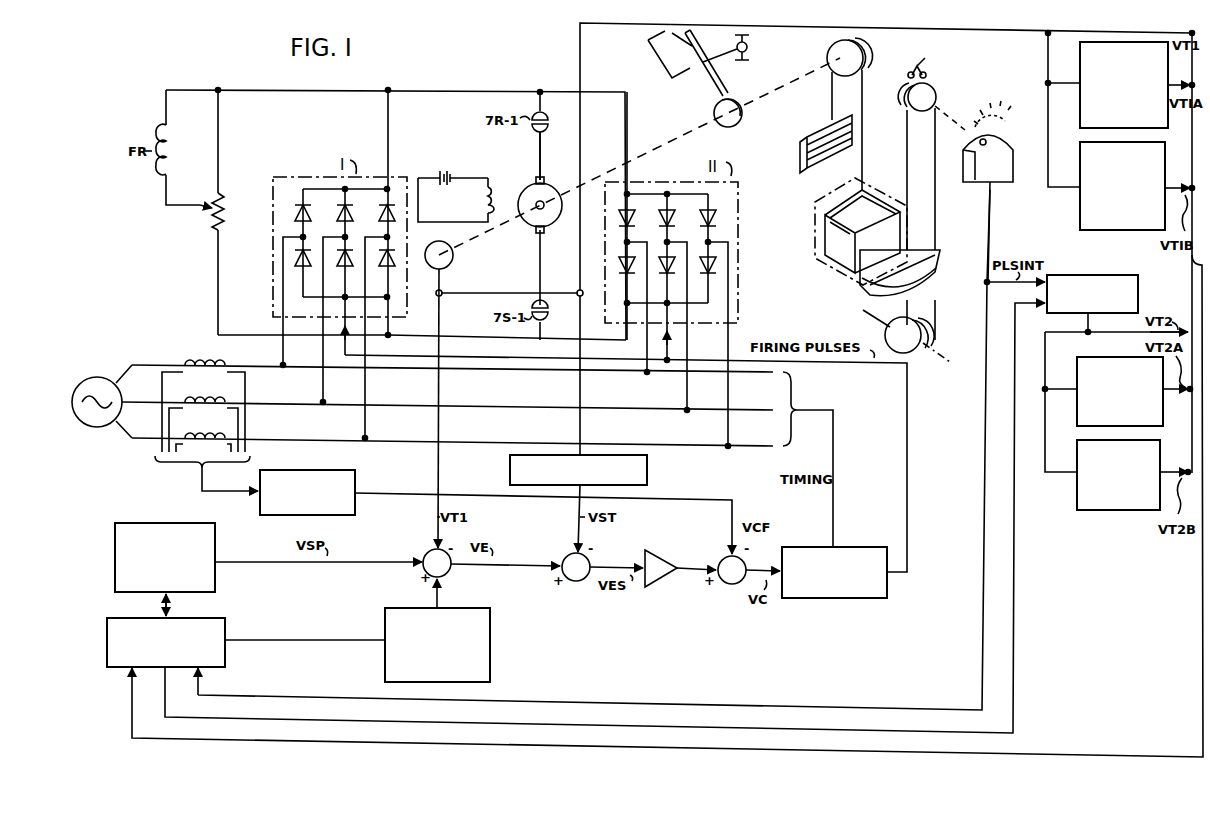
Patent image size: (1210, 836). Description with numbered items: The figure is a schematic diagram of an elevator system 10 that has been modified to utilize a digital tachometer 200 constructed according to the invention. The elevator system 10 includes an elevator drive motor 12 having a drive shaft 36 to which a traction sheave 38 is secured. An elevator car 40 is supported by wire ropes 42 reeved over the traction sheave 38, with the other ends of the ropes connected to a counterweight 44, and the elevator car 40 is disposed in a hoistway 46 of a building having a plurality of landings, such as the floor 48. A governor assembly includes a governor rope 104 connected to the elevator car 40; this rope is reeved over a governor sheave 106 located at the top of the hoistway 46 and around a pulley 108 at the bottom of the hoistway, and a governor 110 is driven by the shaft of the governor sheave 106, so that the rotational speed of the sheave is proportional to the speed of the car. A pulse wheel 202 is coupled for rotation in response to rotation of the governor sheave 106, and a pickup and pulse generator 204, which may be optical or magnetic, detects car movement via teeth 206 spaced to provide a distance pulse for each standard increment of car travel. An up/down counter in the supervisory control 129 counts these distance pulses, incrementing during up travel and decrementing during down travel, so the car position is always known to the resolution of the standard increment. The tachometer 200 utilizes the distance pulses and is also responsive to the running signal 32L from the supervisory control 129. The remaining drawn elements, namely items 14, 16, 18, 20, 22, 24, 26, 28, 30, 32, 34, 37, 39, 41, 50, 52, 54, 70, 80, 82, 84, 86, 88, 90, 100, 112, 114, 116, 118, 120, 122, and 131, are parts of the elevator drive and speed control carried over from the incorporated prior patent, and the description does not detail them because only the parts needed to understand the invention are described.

The elevator system 10 is at (530, 603).
The elevator drive motor 12 is at (523, 171).
The motor armature brush 14 is at (547, 228).
The field winding 16 is at (479, 205).
The thyristor converter bank 18 is at (322, 174).
The thyristor 20 is at (312, 214).
The AC power source 22 is at (102, 370).
The AC supply line 24 is at (312, 366).
The AC supply line 26 is at (260, 410).
The AC supply line 28 is at (342, 438).
The armature supply conductor 30 is at (441, 96).
The armature return conductor 32 is at (406, 322).
The field supply source 34 is at (444, 169).
The drive shaft 36 is at (616, 166).
The brake drum 37 is at (733, 128).
The traction sheave 38 is at (832, 47).
The brake assembly 39 is at (756, 91).
The elevator car 40 is at (830, 197).
The brake arm 41 is at (716, 96).
The wire ropes 42 is at (831, 96).
The counterweight 44 is at (806, 125).
The hoistway 46 is at (814, 226).
The floor 48 is at (940, 260).
The speed pattern generator 50 is at (215, 540).
The armature voltage transducer 52 is at (453, 262).
The summing junction 54 is at (423, 552).
The armature conductor 70 is at (539, 150).
The summing junction 80 is at (567, 551).
The amplifier 82 is at (662, 559).
The current transformer 84 is at (202, 357).
The summing junction 86 is at (728, 550).
The current rectifier 88 is at (355, 505).
The phase controller 90 is at (846, 547).
The differentiator 100 is at (647, 473).
The governor rope 104 is at (930, 300).
The governor sheave 106 is at (936, 100).
The pulley 108 is at (915, 354).
The governor 110 is at (925, 58).
The absolute value amplifier and scaler 112 is at (1080, 108).
The absolute value amplifier and scaler 114 is at (1080, 156).
The amplifier and scaler 116 is at (1077, 374).
The amplifier and scaler 118 is at (1077, 496).
The field rheostat 120 is at (216, 202).
The rheostat wiper 122 is at (212, 210).
The supervisory control 129 is at (225, 628).
The terminal slowdown pattern generator 131 is at (385, 626).
The digital tachometer 200 is at (1104, 272).
The pulse wheel 202 is at (998, 124).
The pickup and pulse generator 204 is at (1003, 165).
The teeth 206 is at (987, 112).
The running signal 32L is at (1022, 298).